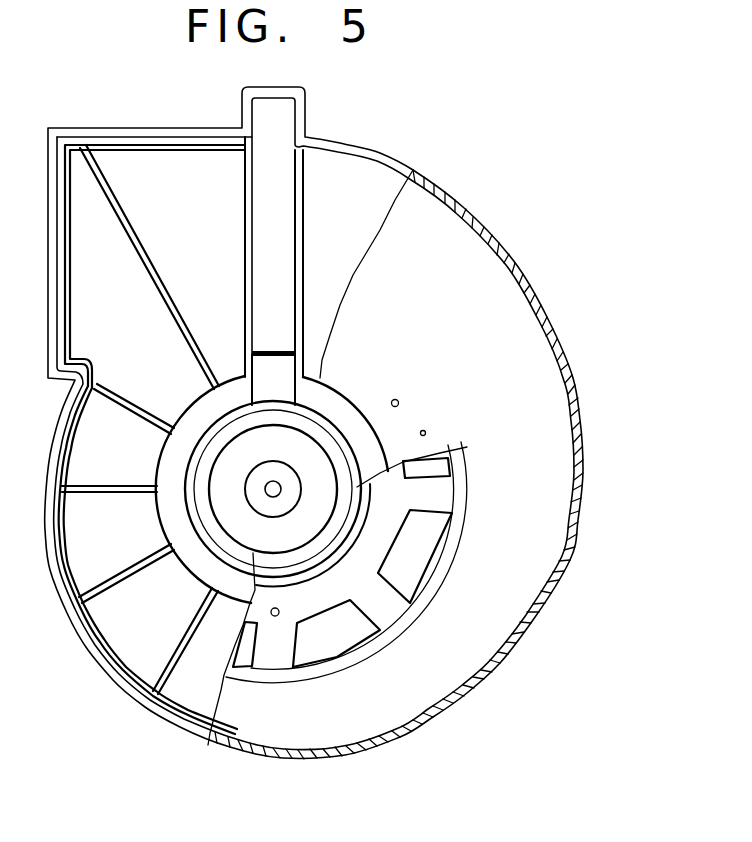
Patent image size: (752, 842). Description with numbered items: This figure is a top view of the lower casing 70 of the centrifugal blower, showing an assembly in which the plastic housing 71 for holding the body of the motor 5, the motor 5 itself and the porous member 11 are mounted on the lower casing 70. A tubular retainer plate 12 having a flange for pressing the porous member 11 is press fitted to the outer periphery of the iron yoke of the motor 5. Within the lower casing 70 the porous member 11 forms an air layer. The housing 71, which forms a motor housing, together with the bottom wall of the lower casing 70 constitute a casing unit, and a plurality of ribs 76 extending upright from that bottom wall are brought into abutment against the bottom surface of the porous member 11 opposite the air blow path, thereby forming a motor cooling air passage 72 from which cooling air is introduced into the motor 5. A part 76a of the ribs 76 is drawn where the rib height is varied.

The motor 5 is at (235, 522).
The porous member 11 is at (512, 280).
The tubular retainer plate 12 is at (440, 488).
The lower casing 70 is at (583, 378).
The plastic housing 71 is at (195, 512).
The motor cooling air passage 72 is at (280, 125).
The ribs 76 is at (118, 200).
The cross bar 76a is at (275, 347).